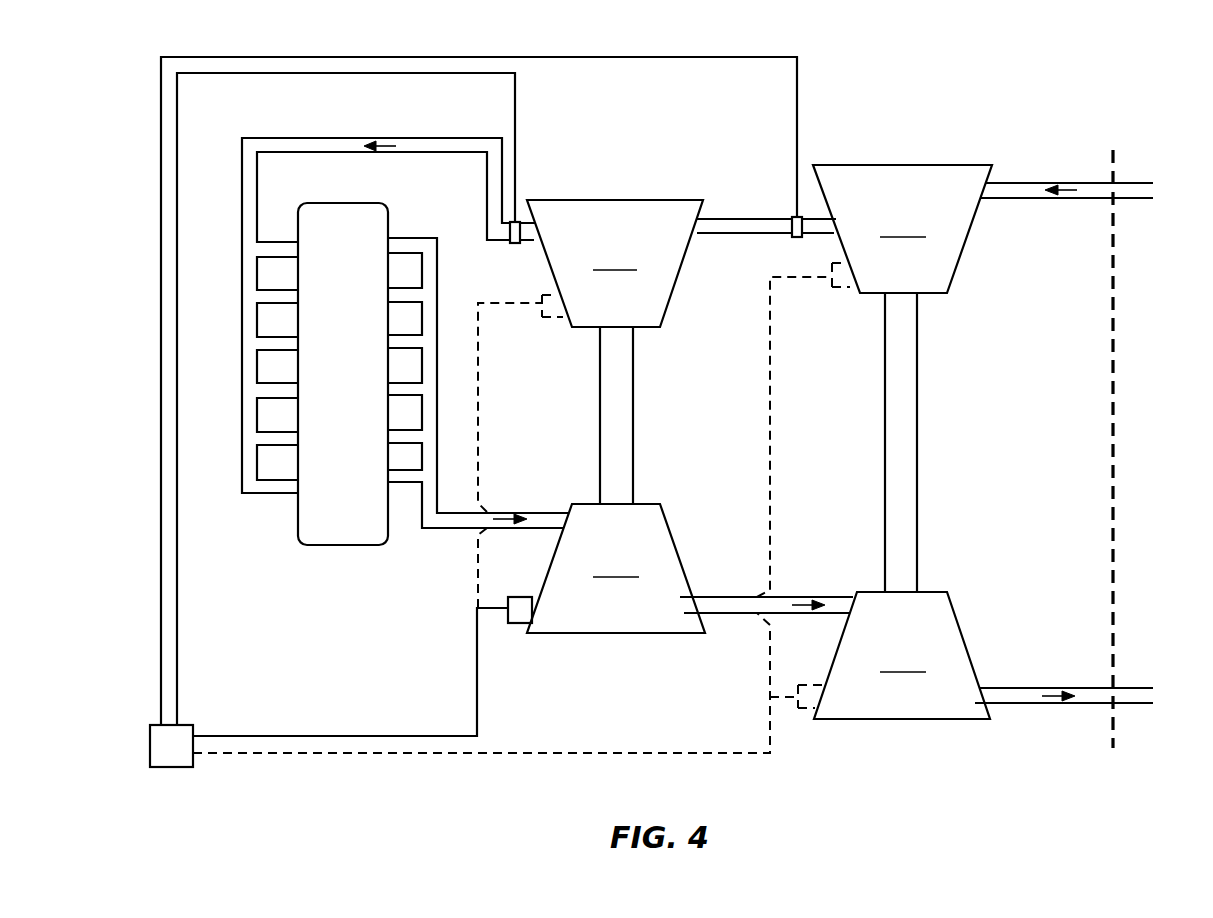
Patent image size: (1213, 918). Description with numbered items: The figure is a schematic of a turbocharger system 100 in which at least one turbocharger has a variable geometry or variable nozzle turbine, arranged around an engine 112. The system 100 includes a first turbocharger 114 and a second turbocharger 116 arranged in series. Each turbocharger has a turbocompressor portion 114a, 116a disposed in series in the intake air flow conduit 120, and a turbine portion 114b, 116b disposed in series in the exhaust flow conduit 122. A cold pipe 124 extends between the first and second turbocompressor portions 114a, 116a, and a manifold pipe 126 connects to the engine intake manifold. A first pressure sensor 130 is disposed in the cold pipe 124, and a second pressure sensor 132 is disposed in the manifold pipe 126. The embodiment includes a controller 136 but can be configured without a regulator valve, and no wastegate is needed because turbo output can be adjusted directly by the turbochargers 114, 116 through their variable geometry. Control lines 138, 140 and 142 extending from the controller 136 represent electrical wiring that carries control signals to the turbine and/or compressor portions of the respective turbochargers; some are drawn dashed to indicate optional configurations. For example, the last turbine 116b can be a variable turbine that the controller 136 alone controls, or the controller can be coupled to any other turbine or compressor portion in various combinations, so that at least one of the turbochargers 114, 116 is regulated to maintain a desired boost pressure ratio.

The turbocharger system 100 is at (885, 94).
The engine 112 is at (350, 203).
The first turbocharger 114 is at (938, 444).
The turbocompressor portion 114a is at (902, 229).
The turbine portion 114b is at (902, 655).
The second turbocharger 116 is at (637, 413).
The turbocompressor portion 116a is at (615, 263).
The turbine portion 116b is at (606, 568).
The intake air flow conduit 120 is at (1135, 190).
The exhaust flow conduit 122 is at (1133, 693).
The cold pipe 124 is at (738, 219).
The manifold pipe 126 is at (432, 138).
The first pressure sensor 130 is at (797, 238).
The second pressure sensor 132 is at (515, 244).
The controller 136 is at (172, 755).
The control line 138 is at (340, 735).
The control line 140 is at (479, 390).
The control line 142 is at (772, 384).